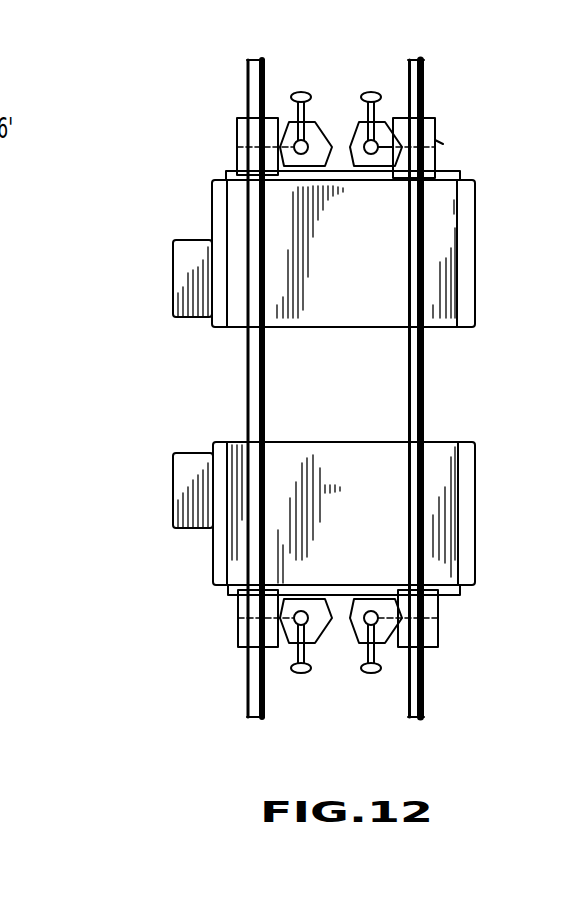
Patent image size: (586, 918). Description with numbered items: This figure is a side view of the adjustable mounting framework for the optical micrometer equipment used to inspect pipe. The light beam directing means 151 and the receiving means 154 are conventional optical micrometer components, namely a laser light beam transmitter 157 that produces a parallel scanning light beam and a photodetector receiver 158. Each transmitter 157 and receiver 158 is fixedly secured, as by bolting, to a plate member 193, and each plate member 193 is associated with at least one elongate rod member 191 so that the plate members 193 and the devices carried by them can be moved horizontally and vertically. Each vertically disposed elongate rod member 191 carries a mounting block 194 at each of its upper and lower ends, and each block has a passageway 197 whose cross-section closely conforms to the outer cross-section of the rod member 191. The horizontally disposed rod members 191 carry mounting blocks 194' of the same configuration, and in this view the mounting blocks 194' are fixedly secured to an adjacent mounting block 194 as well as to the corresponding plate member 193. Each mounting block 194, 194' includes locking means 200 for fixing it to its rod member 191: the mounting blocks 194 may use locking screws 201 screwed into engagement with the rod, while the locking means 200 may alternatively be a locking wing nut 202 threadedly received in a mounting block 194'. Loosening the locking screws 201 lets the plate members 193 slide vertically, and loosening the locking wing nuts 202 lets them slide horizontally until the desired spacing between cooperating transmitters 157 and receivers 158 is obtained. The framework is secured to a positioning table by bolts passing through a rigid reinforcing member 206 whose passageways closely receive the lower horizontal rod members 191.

The light beam directing means 151 is at (180, 288).
The receiving means 154 is at (180, 490).
The laser light beam transmitter 157 is at (441, 235).
The photodetector receiver 158 is at (441, 437).
The elongate rod member 191 is at (422, 63).
The plate member 193 is at (457, 173).
The mounting block 194 is at (340, 384).
The mounting block 194' is at (353, 379).
The passageway 197 is at (237, 147).
The locking means 200 is at (291, 96).
The locking screw 201 is at (437, 155).
The locking wing nut 202 is at (301, 92).
The reinforcing member 206 is at (445, 142).